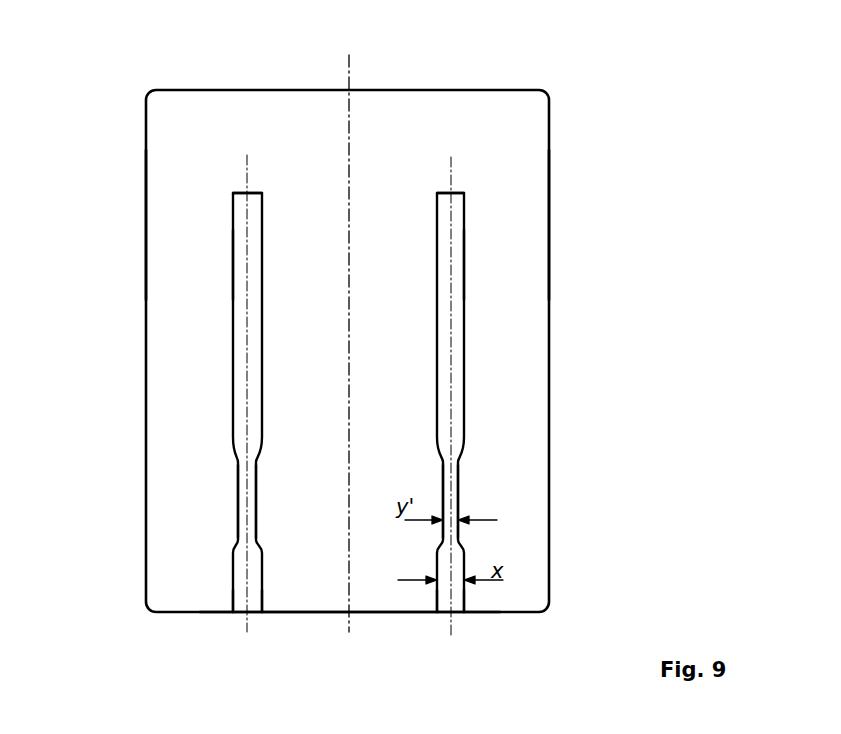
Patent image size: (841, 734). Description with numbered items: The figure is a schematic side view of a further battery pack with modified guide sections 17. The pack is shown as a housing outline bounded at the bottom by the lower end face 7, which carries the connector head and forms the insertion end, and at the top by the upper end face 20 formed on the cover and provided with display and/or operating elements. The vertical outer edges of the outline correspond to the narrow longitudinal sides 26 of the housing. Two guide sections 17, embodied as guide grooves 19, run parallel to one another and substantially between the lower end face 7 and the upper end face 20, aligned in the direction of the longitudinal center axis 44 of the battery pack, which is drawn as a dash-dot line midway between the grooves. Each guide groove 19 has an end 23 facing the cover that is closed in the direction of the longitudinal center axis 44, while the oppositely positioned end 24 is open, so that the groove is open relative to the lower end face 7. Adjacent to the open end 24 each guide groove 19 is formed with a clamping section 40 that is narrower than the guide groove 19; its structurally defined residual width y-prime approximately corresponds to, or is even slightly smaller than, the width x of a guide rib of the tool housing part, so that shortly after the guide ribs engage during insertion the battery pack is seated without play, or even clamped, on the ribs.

The lower end face 7 is at (314, 624).
The guide section 17 is at (218, 362).
The guide groove 19 is at (238, 260).
The upper end face 20 is at (276, 80).
The end 23 is at (240, 192).
The end 24 is at (239, 613).
The narrow longitudinal side 26 is at (138, 204).
The clamping section 40 is at (238, 490).
The longitudinal center axis 44 is at (351, 72).